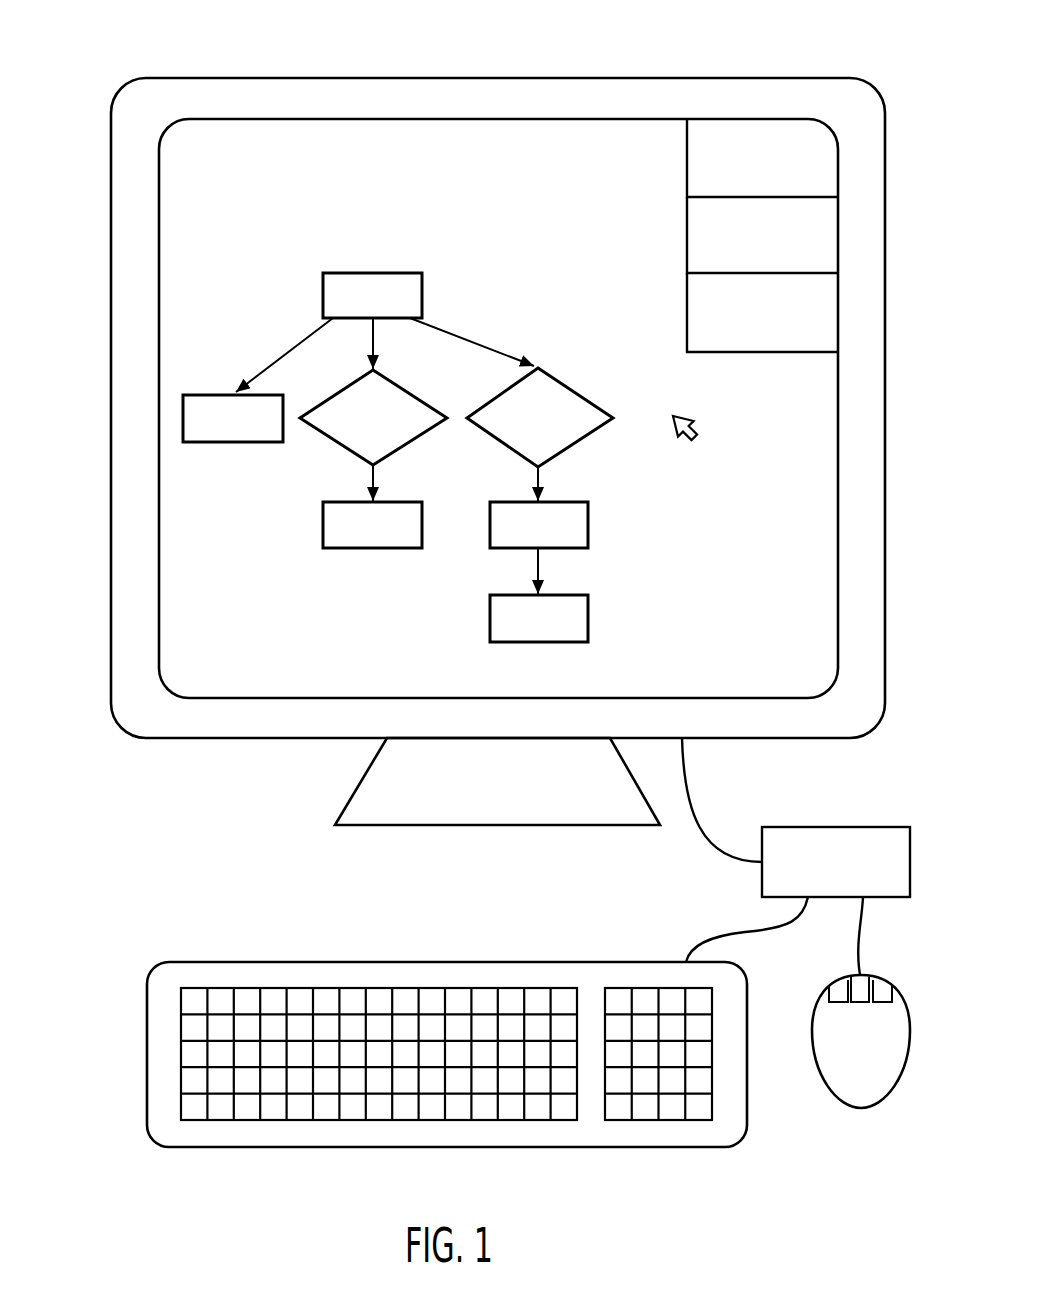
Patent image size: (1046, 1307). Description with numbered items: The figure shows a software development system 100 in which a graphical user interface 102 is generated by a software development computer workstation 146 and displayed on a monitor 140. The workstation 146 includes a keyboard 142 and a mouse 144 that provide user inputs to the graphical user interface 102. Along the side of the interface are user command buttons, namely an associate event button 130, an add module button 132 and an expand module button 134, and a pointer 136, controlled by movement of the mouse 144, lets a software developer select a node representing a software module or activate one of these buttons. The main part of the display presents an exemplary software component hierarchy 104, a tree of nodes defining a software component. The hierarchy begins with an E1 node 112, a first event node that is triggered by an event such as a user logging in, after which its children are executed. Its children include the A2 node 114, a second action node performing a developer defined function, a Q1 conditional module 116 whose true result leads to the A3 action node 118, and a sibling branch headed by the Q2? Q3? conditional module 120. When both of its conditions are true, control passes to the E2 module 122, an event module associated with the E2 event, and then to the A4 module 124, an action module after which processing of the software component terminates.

The software development system 100 is at (221, 43).
The graphical user interface 102 is at (158, 613).
The software component hierarchy 104 is at (256, 280).
The E1 node 112 is at (372, 271).
The A2 node 114 is at (218, 393).
The question node Q1 116 is at (406, 393).
The action node A3 118 is at (323, 525).
The Q2? Q3? conditional module 120 is at (577, 393).
The E2 module 122 is at (590, 527).
The A4 module 124 is at (590, 620).
The associate event button 130 is at (687, 158).
The add module button 132 is at (687, 237).
The expand module button 134 is at (687, 310).
The pointer 136 is at (699, 428).
The monitor 140 is at (885, 580).
The keyboard 142 is at (320, 960).
The mouse 144 is at (859, 1108).
The software development computer workstation 146 is at (843, 826).